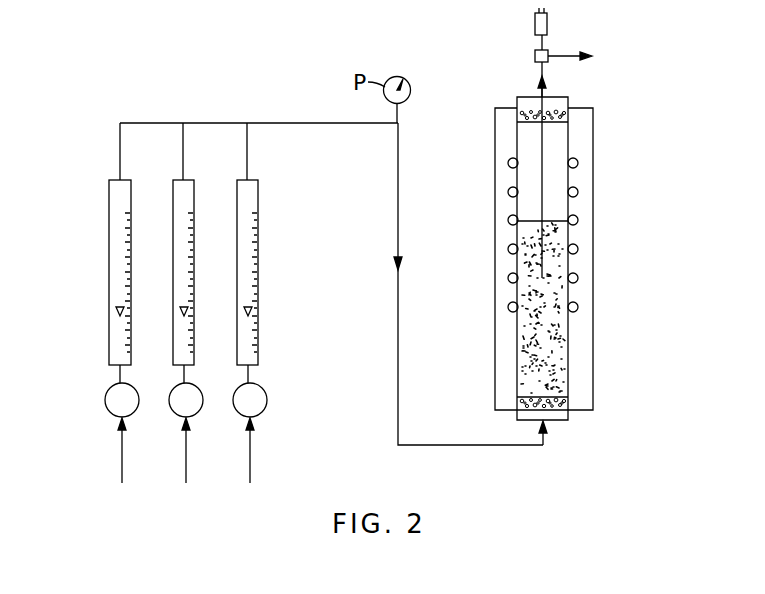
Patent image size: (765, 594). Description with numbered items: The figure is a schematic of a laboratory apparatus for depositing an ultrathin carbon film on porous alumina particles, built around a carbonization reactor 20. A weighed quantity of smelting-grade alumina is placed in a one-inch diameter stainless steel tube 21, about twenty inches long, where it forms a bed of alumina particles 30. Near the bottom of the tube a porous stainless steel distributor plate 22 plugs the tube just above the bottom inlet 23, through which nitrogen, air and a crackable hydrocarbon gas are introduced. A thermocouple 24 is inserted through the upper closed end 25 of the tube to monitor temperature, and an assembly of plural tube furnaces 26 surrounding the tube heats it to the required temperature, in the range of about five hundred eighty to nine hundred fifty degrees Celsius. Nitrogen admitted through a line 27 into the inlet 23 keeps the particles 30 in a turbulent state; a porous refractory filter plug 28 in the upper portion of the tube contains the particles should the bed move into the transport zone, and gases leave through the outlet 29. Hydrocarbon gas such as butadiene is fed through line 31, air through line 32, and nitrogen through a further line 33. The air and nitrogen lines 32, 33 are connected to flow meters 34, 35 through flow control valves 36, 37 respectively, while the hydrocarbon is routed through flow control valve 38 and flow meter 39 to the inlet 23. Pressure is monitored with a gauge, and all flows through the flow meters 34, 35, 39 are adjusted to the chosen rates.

The carbonization reactor 20 is at (603, 184).
The stainless steel tube 21 is at (569, 143).
The porous stainless steel distributor plate 22 is at (567, 395).
The bottom inlet 23 is at (547, 430).
The thermocouple 24 is at (540, 41).
The upper closed end 25 is at (528, 96).
The tube furnaces 26 is at (508, 220).
The nitrogen line 27 is at (398, 347).
The porous refractory filter plug 28 is at (519, 126).
The outlet 29 is at (563, 54).
The alumina particles 30 is at (566, 347).
The hydrocarbon gas line 31 is at (252, 478).
The air line 32 is at (188, 478).
The nitrogen line 33 is at (120, 478).
The flow meter 34 is at (180, 178).
The flow meter 35 is at (110, 238).
The flow control valve 36 is at (178, 412).
The flow control valve 37 is at (108, 408).
The flow control valve 38 is at (266, 402).
The flow meter 39 is at (258, 240).